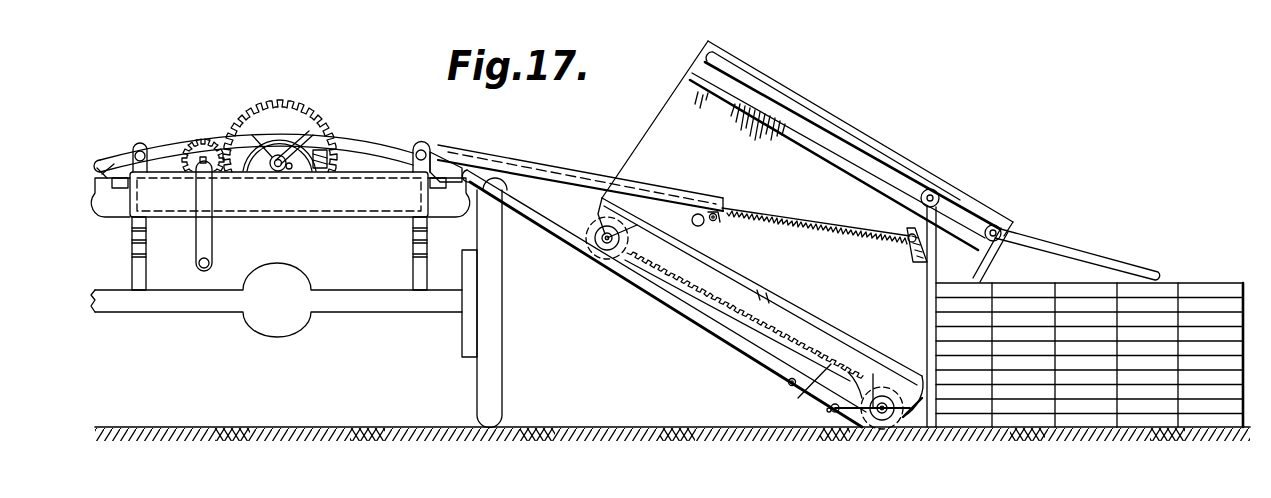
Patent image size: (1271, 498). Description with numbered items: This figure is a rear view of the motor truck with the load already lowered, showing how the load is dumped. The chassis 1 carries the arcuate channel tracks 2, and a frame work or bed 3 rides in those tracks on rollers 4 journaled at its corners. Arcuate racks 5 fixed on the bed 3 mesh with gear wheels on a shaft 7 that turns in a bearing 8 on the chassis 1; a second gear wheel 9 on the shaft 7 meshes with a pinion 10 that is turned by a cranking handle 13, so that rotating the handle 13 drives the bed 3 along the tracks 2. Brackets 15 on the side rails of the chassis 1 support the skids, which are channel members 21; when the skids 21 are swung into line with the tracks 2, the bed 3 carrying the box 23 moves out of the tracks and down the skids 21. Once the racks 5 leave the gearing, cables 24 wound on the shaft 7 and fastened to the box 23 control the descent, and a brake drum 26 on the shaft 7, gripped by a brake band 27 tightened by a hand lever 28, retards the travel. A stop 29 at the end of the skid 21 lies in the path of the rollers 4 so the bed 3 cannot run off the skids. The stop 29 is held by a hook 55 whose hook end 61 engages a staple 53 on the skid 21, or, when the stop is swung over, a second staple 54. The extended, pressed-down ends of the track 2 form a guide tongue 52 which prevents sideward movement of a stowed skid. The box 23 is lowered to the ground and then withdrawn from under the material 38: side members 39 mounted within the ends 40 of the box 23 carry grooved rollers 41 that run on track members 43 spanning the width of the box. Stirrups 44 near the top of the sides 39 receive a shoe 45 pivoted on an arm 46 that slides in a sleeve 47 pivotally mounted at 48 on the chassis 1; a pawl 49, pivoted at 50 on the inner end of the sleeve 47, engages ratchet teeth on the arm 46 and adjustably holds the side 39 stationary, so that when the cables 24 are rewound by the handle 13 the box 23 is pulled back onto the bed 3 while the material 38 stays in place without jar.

The chassis 1 is at (279, 194).
The arcuate channel tracks 2 is at (186, 142).
The frame work or bed 3 is at (813, 342).
The rollers 4 is at (606, 246).
The arcuate racks 5 is at (806, 394).
The shaft 7 is at (278, 172).
The bearing 8 is at (291, 169).
The second gear wheel 9 is at (252, 120).
The pinion 10 is at (196, 168).
The cranking handle 13 is at (211, 244).
The brackets 15 is at (113, 210).
The skid channel members 21 is at (678, 308).
The box 23 is at (655, 144).
The cables 24 is at (569, 210).
The brake drum 26 is at (264, 160).
The brake band 27 is at (312, 130).
The hand lever 28 is at (285, 127).
The stop 29 is at (895, 420).
The material 38 is at (1089, 355).
The side members 39 is at (1090, 259).
The ends 40 is at (806, 213).
The rollers 41 is at (940, 197).
The track members 43 is at (824, 126).
The stirrups 44 is at (912, 260).
The shoe 45 is at (906, 236).
The arm 46 is at (806, 211).
The sleeve 47 is at (455, 147).
The sleeve pivot 48 is at (418, 147).
The pawl 49 is at (718, 221).
The pawl pivot 50 is at (716, 226).
The guide member or tongue 52 is at (111, 166).
The staple 53 is at (832, 412).
The staple 54 is at (788, 384).
The hook 55 is at (863, 410).
The hook end 61 is at (827, 411).